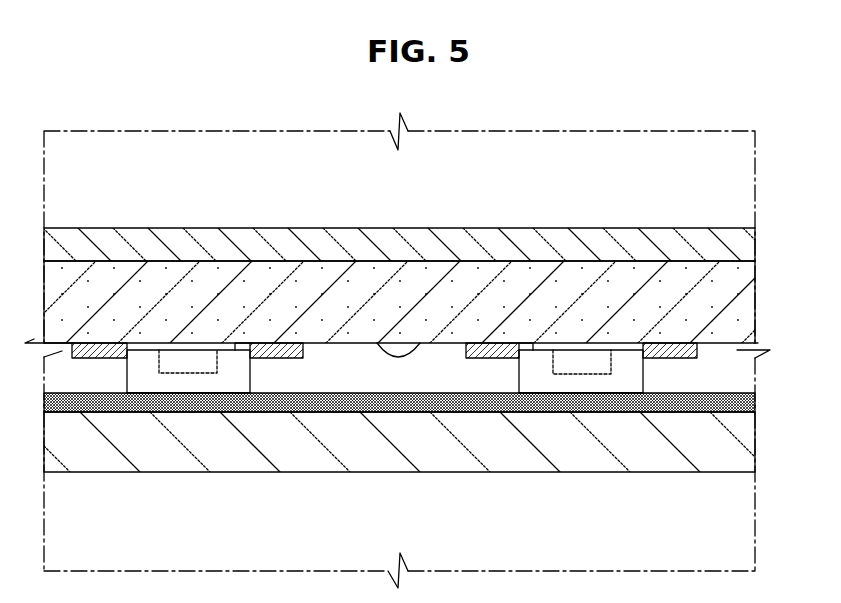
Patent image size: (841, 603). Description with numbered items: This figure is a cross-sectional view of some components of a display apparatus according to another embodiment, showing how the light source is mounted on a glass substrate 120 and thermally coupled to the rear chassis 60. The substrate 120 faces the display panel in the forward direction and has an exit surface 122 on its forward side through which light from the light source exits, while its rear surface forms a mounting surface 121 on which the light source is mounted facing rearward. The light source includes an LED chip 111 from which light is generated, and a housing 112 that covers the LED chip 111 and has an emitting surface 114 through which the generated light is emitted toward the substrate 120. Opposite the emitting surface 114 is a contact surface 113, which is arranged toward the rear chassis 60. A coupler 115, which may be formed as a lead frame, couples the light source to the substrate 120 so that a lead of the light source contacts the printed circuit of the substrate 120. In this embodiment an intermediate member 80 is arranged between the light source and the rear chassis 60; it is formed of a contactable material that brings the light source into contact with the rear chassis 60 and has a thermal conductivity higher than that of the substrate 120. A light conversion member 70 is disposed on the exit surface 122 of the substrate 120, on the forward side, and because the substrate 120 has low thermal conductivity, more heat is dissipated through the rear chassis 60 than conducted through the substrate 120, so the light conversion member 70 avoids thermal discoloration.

The rear chassis 60 is at (433, 462).
The light conversion member 70 is at (317, 236).
The intermediate member 80 is at (745, 402).
The LED chip 111 is at (182, 368).
The housing 112 is at (234, 385).
The contact surface 113 is at (152, 393).
The emitting surface 114 is at (187, 350).
The coupler 115 is at (286, 351).
The substrate 120 is at (742, 297).
The mounting surface 121 is at (420, 342).
The exit surface 122 is at (683, 262).